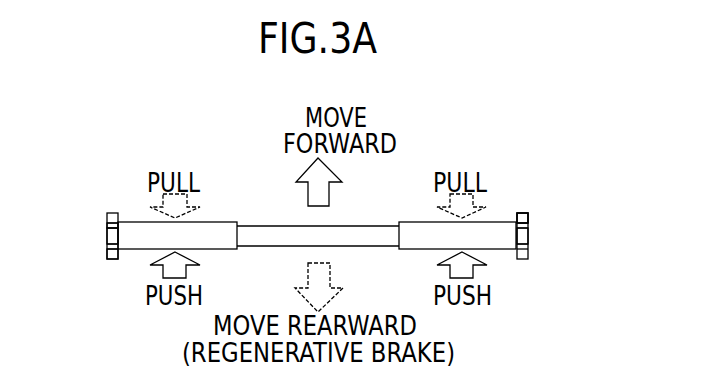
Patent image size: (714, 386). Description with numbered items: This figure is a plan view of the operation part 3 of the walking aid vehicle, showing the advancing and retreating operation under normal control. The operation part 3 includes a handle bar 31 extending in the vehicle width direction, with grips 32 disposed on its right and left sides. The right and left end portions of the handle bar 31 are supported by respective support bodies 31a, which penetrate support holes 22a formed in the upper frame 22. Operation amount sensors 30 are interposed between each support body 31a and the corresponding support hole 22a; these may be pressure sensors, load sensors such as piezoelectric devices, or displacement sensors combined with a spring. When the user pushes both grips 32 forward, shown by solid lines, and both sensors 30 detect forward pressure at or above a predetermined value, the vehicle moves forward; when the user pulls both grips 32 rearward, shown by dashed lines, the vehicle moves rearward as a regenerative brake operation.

The operation part 3 is at (313, 209).
The upper frame 22 is at (115, 213).
The support hole 22a is at (108, 258).
The operation amount sensor 30 is at (107, 227).
The handle bar 31 is at (263, 225).
The support body 31a is at (107, 235).
The grip 32 is at (210, 222).